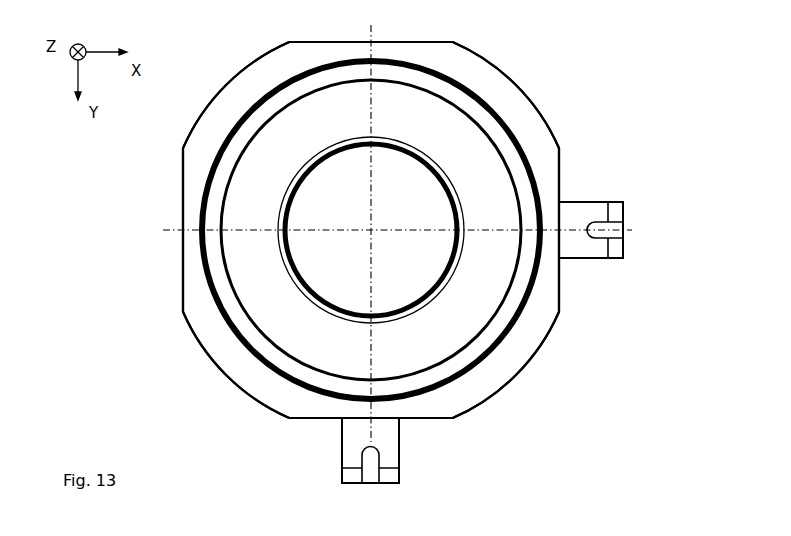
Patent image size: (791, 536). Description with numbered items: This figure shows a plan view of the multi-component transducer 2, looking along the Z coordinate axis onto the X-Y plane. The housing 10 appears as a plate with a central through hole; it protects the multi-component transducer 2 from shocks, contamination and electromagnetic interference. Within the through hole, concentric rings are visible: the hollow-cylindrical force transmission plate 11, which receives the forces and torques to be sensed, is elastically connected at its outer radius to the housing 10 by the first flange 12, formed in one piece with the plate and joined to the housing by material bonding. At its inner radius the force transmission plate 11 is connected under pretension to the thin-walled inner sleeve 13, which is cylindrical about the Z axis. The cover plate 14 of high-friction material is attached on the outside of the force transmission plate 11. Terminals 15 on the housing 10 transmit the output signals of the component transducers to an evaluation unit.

The multi-component transducer 2 is at (578, 106).
The housing 10 is at (520, 373).
The force transmission plate 11 is at (229, 162).
The first flange 12 is at (198, 247).
The inner sleeve 13 is at (400, 152).
The cover plate 14 is at (270, 212).
The terminal 15 is at (583, 242).